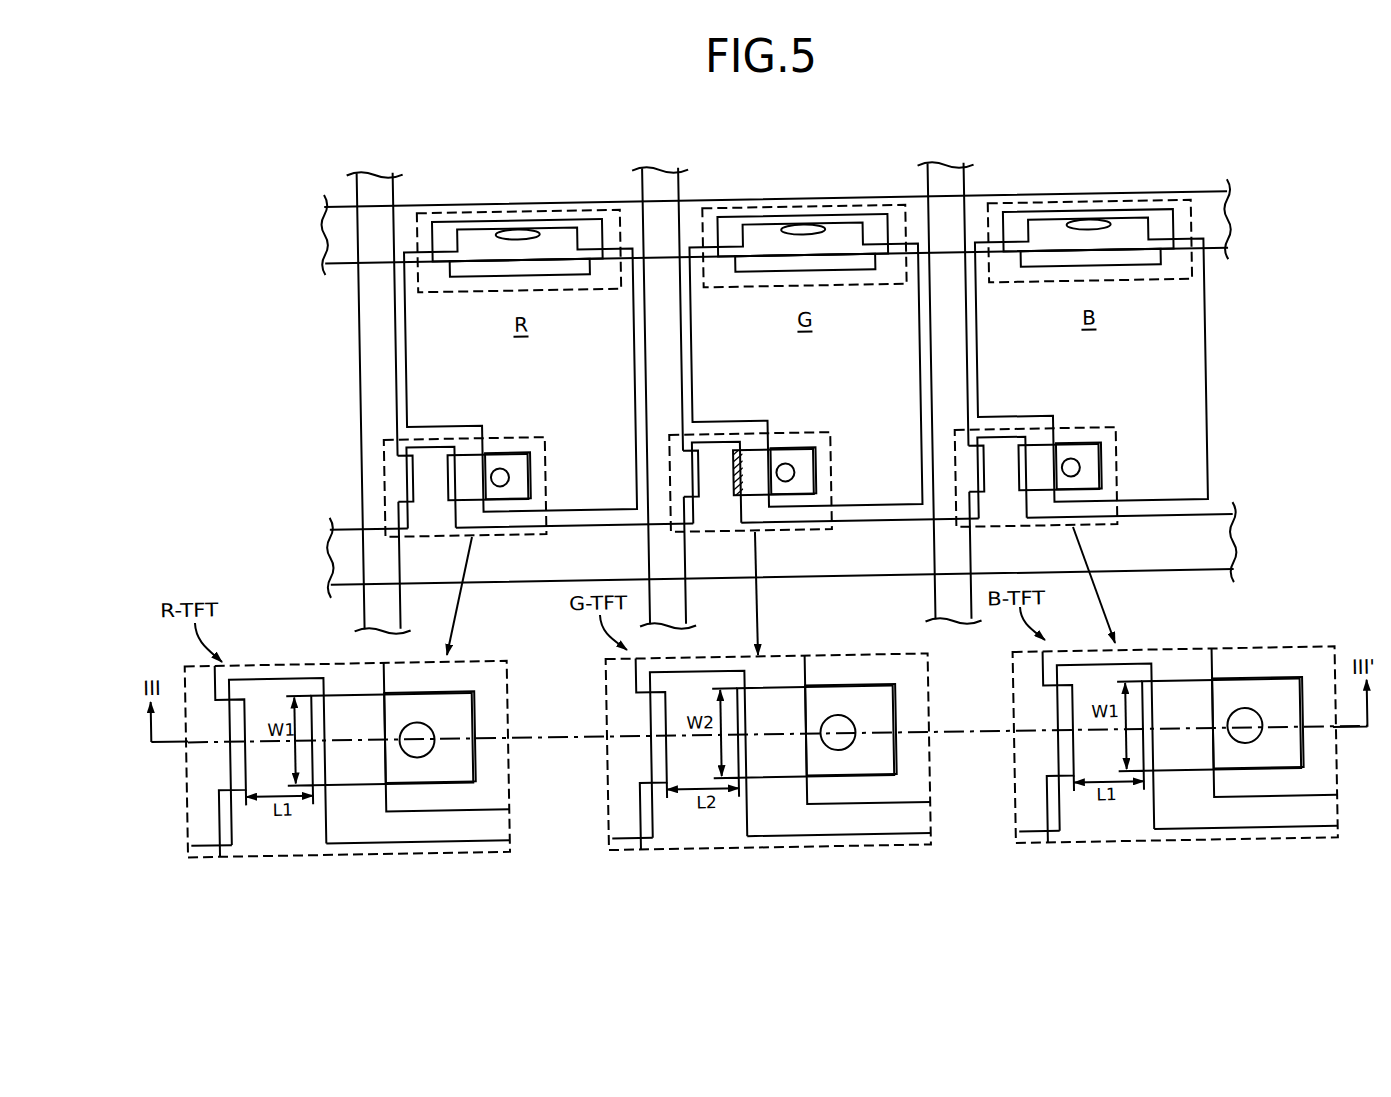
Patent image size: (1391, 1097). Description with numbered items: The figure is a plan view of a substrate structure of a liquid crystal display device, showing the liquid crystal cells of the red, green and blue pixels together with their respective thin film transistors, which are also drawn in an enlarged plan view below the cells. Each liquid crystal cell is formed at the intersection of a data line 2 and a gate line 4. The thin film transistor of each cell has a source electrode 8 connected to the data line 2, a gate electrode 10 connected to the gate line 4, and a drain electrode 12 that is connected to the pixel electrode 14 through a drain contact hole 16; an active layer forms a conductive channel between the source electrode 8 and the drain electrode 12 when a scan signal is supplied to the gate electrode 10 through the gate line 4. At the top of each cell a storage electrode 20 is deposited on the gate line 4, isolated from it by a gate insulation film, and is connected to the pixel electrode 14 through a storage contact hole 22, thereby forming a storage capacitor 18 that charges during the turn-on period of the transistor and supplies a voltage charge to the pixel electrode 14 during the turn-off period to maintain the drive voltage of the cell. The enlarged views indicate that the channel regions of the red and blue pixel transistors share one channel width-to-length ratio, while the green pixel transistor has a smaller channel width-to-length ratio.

The data line 2 is at (372, 604).
The gate line 4 is at (1216, 213).
The source electrode 8 is at (410, 432).
The gate electrode 10 is at (431, 449).
The drain electrode 12 is at (519, 458).
The pixel electrode 14 is at (1194, 387).
The drain contact hole 16 is at (501, 463).
The storage capacitor 18 is at (1196, 269).
The storage electrode 20 is at (1163, 232).
The storage contact hole 22 is at (1096, 234).